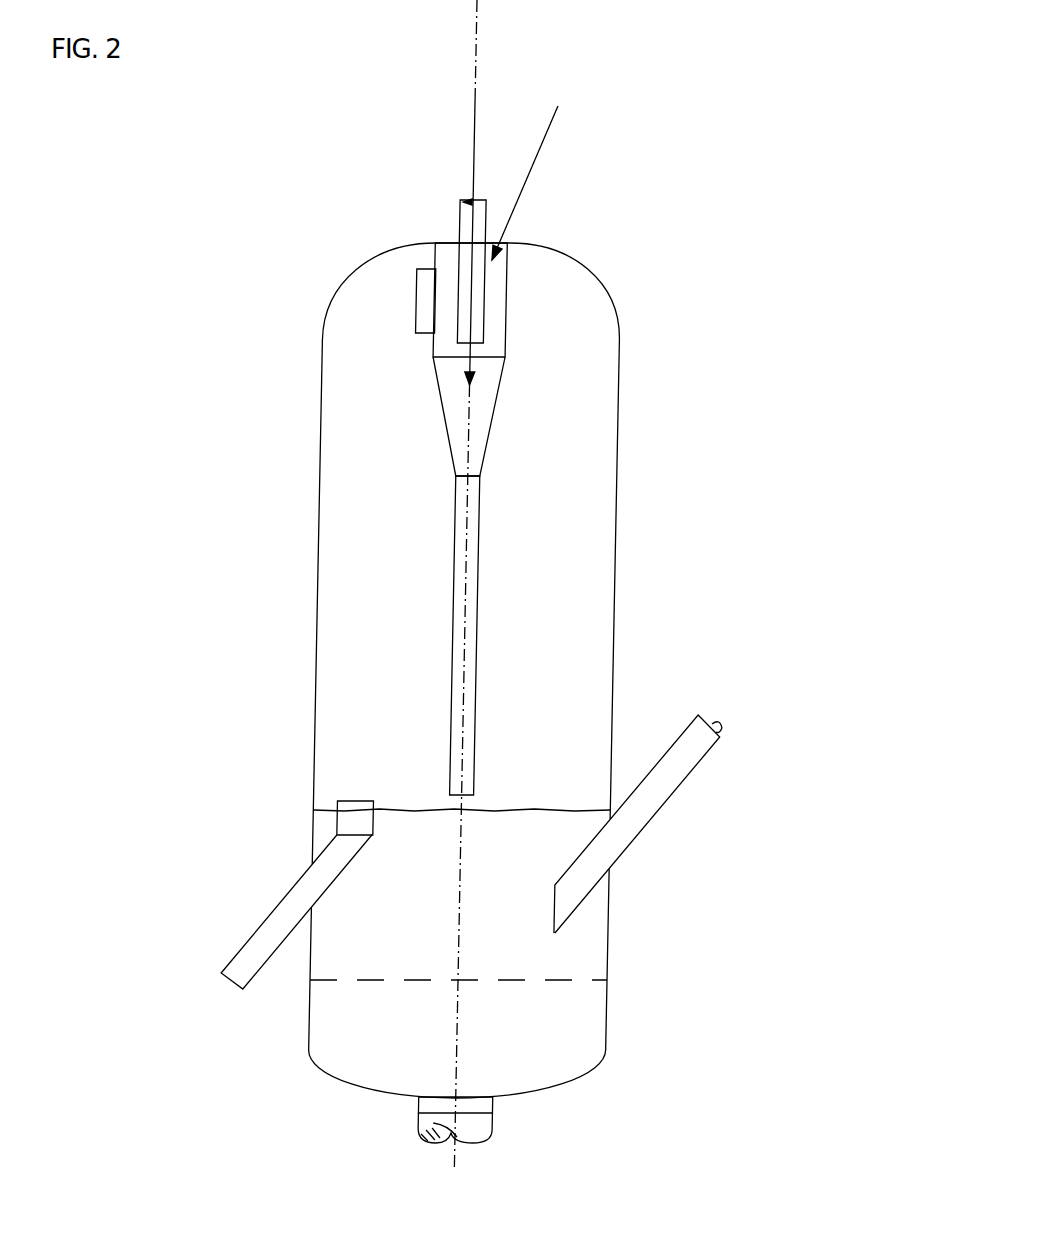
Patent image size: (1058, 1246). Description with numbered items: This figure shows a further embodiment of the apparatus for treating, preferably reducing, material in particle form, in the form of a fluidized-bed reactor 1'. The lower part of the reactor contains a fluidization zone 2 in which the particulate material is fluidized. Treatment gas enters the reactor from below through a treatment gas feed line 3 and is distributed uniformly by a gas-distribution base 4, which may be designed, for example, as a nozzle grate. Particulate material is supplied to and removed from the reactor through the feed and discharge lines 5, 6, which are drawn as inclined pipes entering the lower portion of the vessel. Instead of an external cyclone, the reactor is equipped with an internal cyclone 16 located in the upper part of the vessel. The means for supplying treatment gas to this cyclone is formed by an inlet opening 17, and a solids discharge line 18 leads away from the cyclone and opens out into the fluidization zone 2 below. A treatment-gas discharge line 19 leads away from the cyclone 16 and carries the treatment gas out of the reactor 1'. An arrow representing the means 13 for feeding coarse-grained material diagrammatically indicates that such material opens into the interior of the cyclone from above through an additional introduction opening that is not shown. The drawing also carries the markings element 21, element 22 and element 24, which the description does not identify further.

The fluidized-bed reactor 1' is at (540, 675).
The fluidization zone 2 is at (461, 897).
The treatment gas feed line 3 is at (502, 1125).
The gas-distribution base 4 is at (579, 982).
The feed line for particulate material 5 is at (673, 802).
The discharge line for particulate material 6 is at (295, 923).
The means for feeding coarse-grained material 13 is at (541, 152).
The internal cyclone 16 is at (501, 318).
The inlet opening 17 is at (429, 277).
The solids discharge line 18 is at (486, 393).
The treatment-gas discharge line 19 is at (589, 267).
The upper chamber / gas zone 21 is at (407, 536).
The inner tube 22 is at (464, 203).
The central line / probe 24 is at (477, 88).